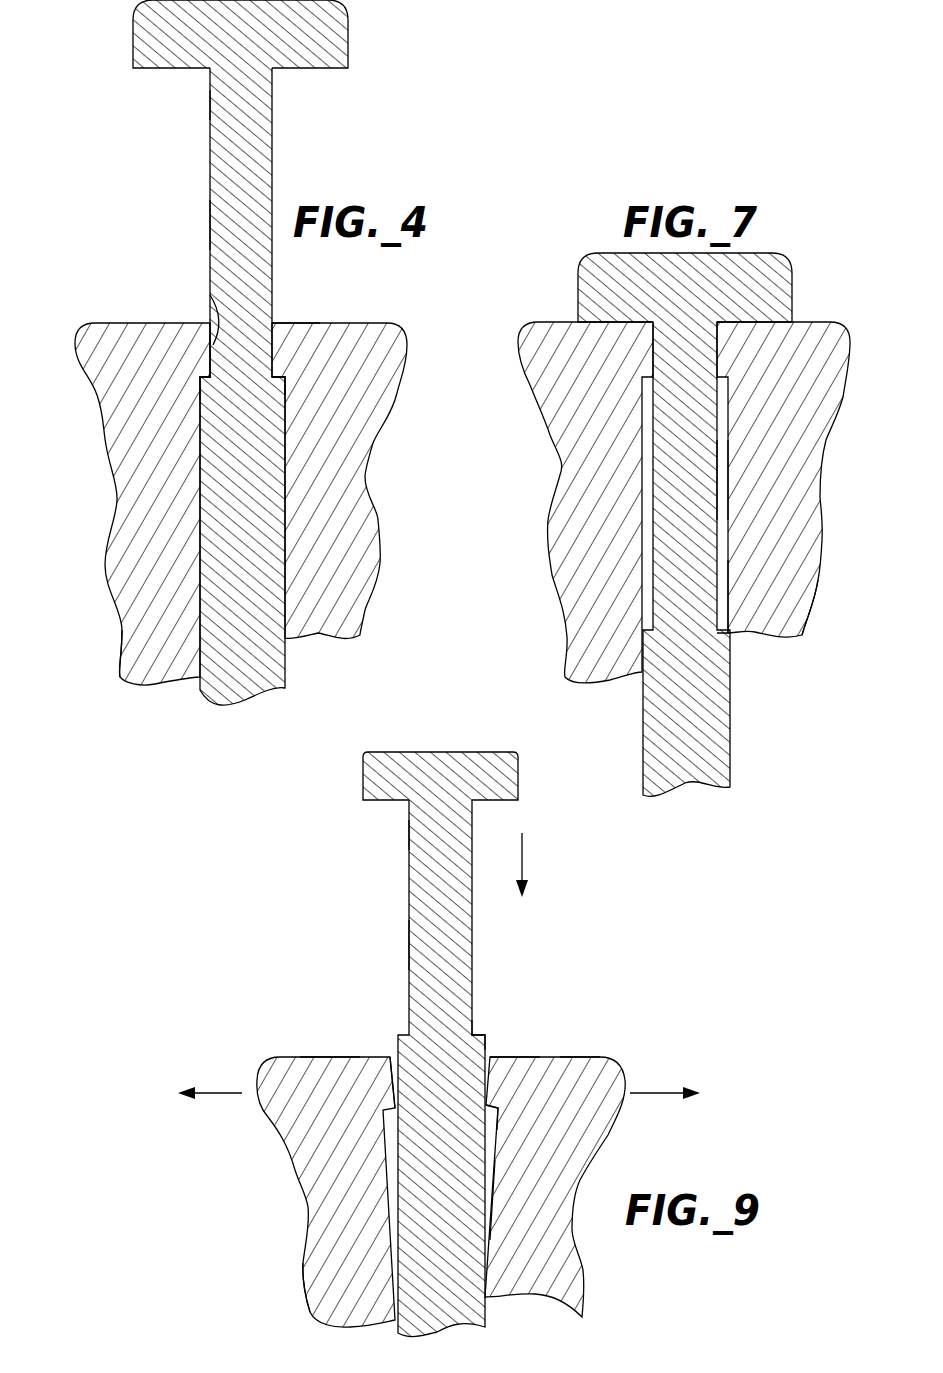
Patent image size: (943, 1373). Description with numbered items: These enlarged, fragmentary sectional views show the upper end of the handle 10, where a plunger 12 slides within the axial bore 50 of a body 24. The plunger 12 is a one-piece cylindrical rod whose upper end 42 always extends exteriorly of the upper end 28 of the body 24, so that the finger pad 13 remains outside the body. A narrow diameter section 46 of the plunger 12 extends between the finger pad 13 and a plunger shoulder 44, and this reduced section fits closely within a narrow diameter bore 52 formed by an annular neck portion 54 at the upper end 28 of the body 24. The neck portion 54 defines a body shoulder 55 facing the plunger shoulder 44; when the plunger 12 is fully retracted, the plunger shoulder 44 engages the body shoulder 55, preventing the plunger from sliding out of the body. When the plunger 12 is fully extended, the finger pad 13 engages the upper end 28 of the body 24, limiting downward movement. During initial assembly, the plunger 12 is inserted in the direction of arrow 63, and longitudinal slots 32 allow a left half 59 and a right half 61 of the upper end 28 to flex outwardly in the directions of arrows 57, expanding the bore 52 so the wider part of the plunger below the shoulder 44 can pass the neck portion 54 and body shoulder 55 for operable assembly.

In FIG. 4, the handle 10 is at (363, 157).
In FIG. 7, the handle 10 is at (810, 270).
In FIG. 4, the plunger 12 is at (272, 275).
In FIG. 7, the plunger 12 is at (693, 573).
In FIG. 9, the plunger 12 is at (472, 942).
In FIG. 4, the finger pad 13 is at (133, 45).
In FIG. 7, the finger pad 13 is at (578, 287).
In FIG. 9, the finger pad 13 is at (363, 775).
In FIG. 4, the body 24 is at (130, 618).
In FIG. 7, the body 24 is at (815, 587).
In FIG. 9, the body 24 is at (302, 1275).
In FIG. 4, the upper end of body 28 is at (93, 408).
In FIG. 7, the upper end of body 28 is at (845, 345).
In FIG. 9, the upper end of body 28 is at (297, 1200).
In FIG. 9, the longitudinal slots 32 is at (490, 1195).
In FIG. 4, the upper end of plunger 42 is at (188, 104).
In FIG. 9, the upper end of plunger 42 is at (390, 834).
In FIG. 4, the plunger shoulder 44 is at (200, 390).
In FIG. 7, the plunger shoulder 44 is at (733, 605).
In FIG. 9, the plunger shoulder 44 is at (477, 1035).
In FIG. 4, the narrow diameter section 46 is at (210, 222).
In FIG. 9, the narrow diameter section 46 is at (409, 940).
In FIG. 7, the axial bore 50 is at (720, 470).
In FIG. 4, the narrow diameter bore 52 is at (212, 300).
In FIG. 9, the narrow diameter bore 52 is at (396, 1055).
In FIG. 4, the annular neck portion 54 is at (295, 323).
In FIG. 9, the annular neck portion 54 is at (500, 1055).
In FIG. 4, the body shoulder 55 is at (283, 385).
In FIG. 9, the body shoulder 55 is at (500, 1120).
In FIG. 9, the arrows 57 is at (230, 1093).
In FIG. 9, the left half 59 is at (316, 1058).
In FIG. 9, the right half 61 is at (600, 1060).
In FIG. 9, the arrow 63 is at (522, 863).